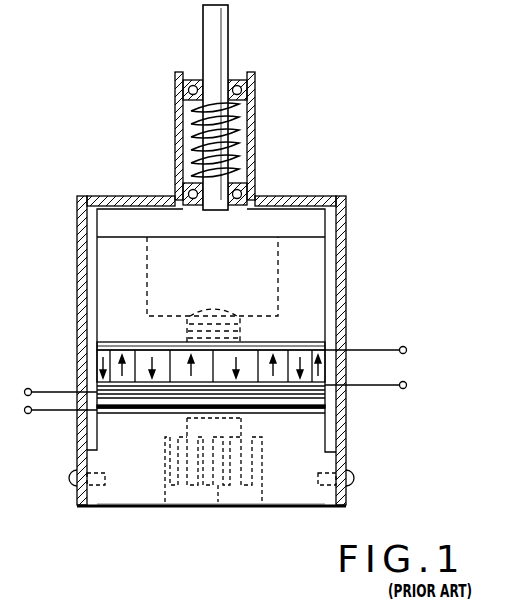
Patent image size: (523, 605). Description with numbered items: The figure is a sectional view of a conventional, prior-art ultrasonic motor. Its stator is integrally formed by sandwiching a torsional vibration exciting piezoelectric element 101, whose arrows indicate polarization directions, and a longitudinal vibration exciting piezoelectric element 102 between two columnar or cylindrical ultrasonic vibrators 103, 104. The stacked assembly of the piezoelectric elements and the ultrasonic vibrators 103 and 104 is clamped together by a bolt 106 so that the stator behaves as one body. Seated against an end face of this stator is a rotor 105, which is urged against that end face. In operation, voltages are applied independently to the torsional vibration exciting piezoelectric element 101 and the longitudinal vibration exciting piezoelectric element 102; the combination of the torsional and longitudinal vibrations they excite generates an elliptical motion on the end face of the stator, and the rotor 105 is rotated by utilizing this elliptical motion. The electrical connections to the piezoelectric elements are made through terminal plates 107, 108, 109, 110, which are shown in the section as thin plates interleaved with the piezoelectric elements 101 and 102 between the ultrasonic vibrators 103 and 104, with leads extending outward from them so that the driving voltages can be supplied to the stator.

The torsional vibration exciting piezoelectric element 101 is at (100, 366).
The longitudinal vibration exciting piezoelectric element 102 is at (317, 403).
The ultrasonic vibrator 103 is at (291, 488).
The ultrasonic vibrator 104 is at (310, 280).
The rotor 105 is at (130, 223).
The bolt 106 is at (217, 488).
The terminal plate 107 is at (308, 343).
The terminal plate 108 is at (97, 381).
The terminal plate 109 is at (90, 413).
The terminal plate 110 is at (141, 412).